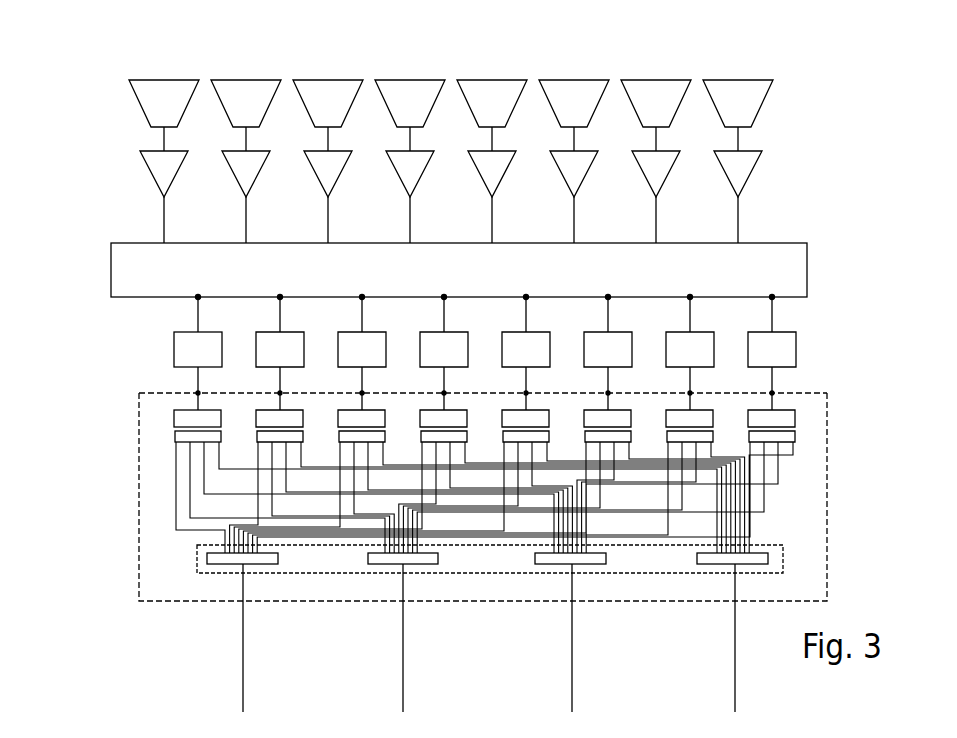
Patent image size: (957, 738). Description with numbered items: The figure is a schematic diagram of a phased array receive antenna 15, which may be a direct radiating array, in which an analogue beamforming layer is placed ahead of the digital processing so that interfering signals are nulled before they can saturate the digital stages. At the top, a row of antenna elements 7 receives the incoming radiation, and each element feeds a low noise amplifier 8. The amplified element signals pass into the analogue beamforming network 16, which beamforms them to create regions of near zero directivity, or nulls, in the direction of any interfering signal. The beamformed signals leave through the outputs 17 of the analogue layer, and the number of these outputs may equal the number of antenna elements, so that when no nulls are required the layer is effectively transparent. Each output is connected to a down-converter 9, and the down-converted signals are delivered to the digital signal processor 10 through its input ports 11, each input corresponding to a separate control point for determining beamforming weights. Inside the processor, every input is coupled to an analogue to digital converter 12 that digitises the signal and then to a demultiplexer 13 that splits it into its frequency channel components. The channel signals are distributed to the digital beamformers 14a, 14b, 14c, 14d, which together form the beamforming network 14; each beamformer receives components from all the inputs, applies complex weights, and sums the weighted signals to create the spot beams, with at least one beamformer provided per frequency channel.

The phased array antenna 15 is at (153, 59).
The antenna element 7 is at (160, 112).
The low noise amplifier 8 is at (160, 178).
The analogue beamforming network 16 is at (111, 262).
The output 17 is at (198, 297).
The down-converter 9 is at (178, 347).
The digital signal processor 10 is at (138, 520).
The input port 11 is at (190, 393).
The analogue to digital converter 12 is at (185, 418).
The demultiplexer 13 is at (185, 437).
The beamforming network 14 is at (197, 558).
The digital beamformer 14a is at (232, 558).
The digital beamformer 14b is at (392, 558).
The digital beamformer 14c is at (560, 558).
The digital beamformer 14d is at (720, 558).